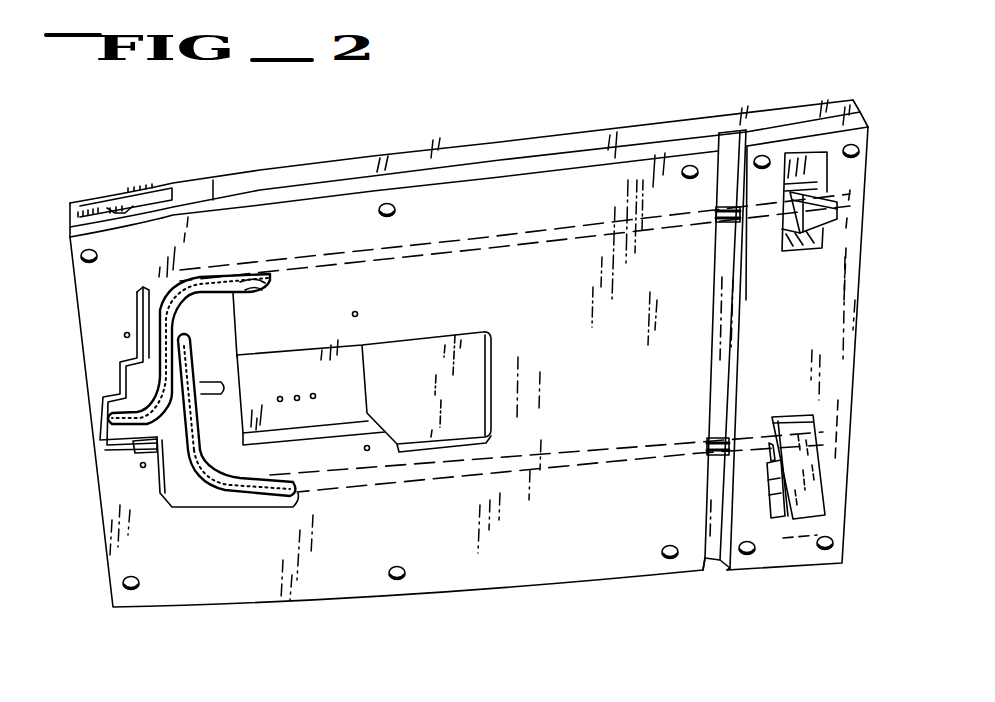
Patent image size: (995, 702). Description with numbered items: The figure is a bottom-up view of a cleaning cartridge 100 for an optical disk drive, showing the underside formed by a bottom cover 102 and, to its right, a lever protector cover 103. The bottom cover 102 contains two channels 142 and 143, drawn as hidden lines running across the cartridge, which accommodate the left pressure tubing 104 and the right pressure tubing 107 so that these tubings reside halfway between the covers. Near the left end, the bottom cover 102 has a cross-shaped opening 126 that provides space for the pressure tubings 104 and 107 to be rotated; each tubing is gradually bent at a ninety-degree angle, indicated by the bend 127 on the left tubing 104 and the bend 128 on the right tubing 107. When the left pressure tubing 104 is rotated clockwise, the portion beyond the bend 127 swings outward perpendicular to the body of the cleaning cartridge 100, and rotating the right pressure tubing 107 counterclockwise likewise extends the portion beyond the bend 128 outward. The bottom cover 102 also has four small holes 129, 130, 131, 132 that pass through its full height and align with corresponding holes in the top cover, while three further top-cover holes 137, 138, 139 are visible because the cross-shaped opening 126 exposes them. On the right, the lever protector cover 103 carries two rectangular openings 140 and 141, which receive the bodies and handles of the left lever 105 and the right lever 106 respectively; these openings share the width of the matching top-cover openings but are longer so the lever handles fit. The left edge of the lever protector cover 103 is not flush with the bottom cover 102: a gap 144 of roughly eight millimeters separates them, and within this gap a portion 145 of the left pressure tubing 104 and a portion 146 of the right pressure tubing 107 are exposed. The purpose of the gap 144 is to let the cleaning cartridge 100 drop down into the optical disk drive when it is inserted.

The cleaning cartridge 100 is at (233, 592).
The bottom cover 102 is at (638, 150).
The lever protector cover 103 is at (857, 123).
The left pressure tubing 104 is at (170, 320).
The left lever 105 is at (832, 217).
The right lever 106 is at (809, 505).
The right pressure tubing 107 is at (187, 368).
The cross-shaped opening 126 is at (410, 355).
The 90 degree bend 127 is at (160, 300).
The 90 degree bend 128 is at (210, 488).
The small hole 129 is at (126, 334).
The small hole 130 is at (357, 313).
The small hole 131 is at (364, 448).
The small hole 132 is at (141, 466).
The hole of top cover 137 is at (280, 396).
The hole of top cover 138 is at (297, 395).
The hole of top cover 139 is at (313, 399).
The rectangular opening 140 is at (808, 172).
The rectangular opening 141 is at (775, 485).
The channel 142 is at (527, 242).
The channel 143 is at (562, 460).
The gap 144 is at (732, 142).
The exposed portion of left pressure tubing 145 is at (729, 205).
The exposed portion of right pressure tubing 146 is at (718, 443).